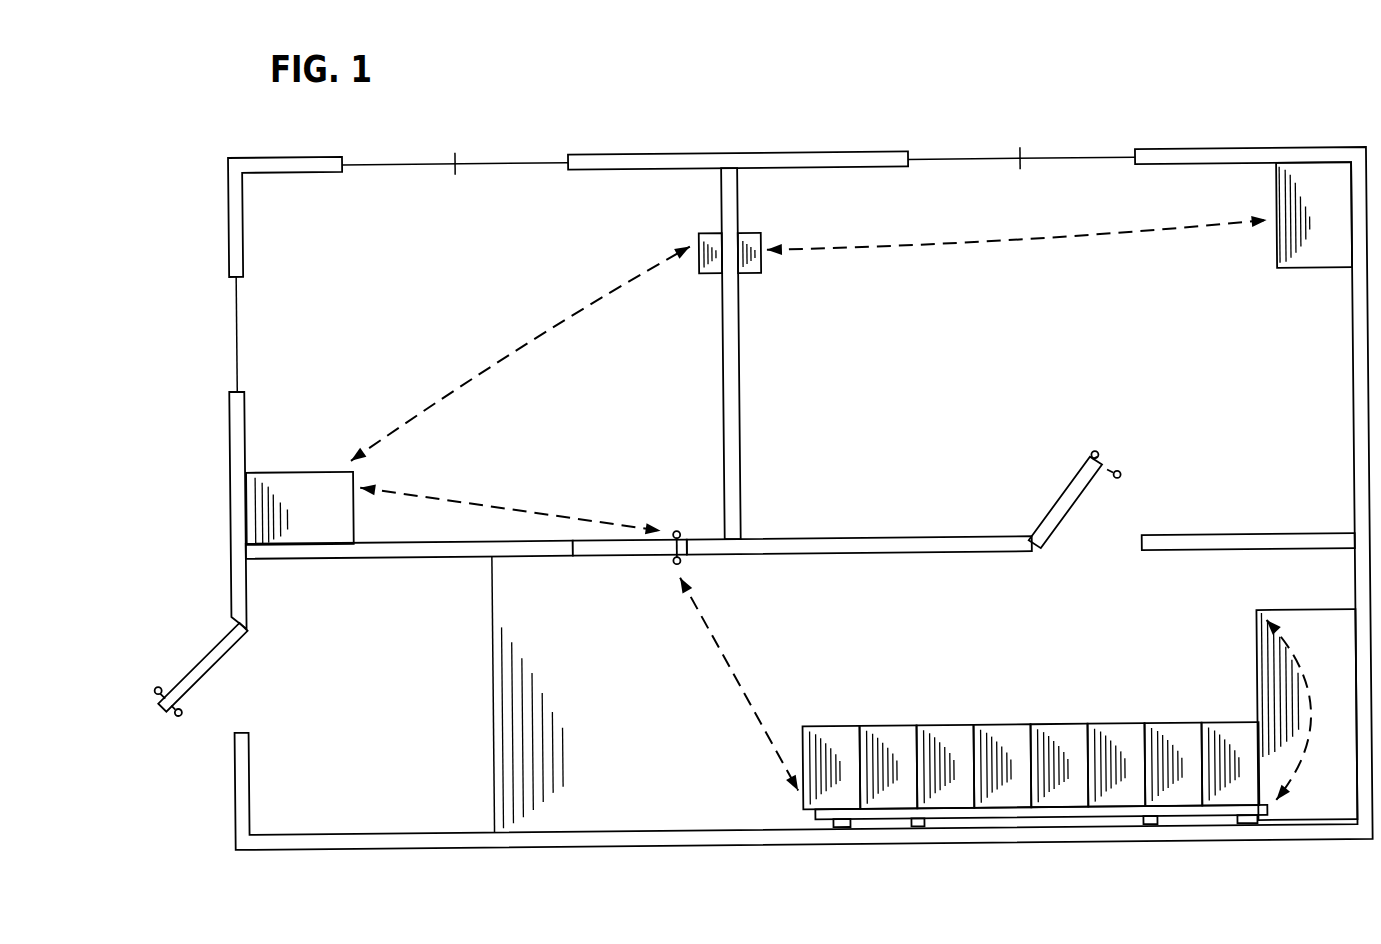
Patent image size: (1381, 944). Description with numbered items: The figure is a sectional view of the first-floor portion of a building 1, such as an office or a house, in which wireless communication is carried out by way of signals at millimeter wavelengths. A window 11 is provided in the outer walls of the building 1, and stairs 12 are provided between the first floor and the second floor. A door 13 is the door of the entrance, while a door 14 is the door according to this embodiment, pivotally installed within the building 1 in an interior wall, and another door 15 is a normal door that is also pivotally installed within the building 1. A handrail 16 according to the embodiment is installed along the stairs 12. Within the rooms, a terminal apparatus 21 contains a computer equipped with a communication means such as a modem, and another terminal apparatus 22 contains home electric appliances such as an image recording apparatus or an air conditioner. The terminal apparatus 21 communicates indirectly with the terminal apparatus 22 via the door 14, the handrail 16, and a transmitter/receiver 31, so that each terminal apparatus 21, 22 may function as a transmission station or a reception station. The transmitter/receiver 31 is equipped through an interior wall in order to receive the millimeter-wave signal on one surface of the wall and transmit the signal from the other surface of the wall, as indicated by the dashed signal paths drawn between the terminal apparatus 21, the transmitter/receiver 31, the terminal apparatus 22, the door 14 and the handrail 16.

The building 1 is at (753, 140).
The window 11 is at (493, 162).
The stairs 12 is at (955, 732).
The door 13 is at (205, 655).
The door 14 is at (618, 562).
The door 15 is at (1072, 486).
The handrail 16 is at (1056, 824).
The terminal apparatus 21 is at (290, 473).
The terminal apparatus 22 is at (1316, 277).
The transmitter/receiver 31 is at (703, 279).